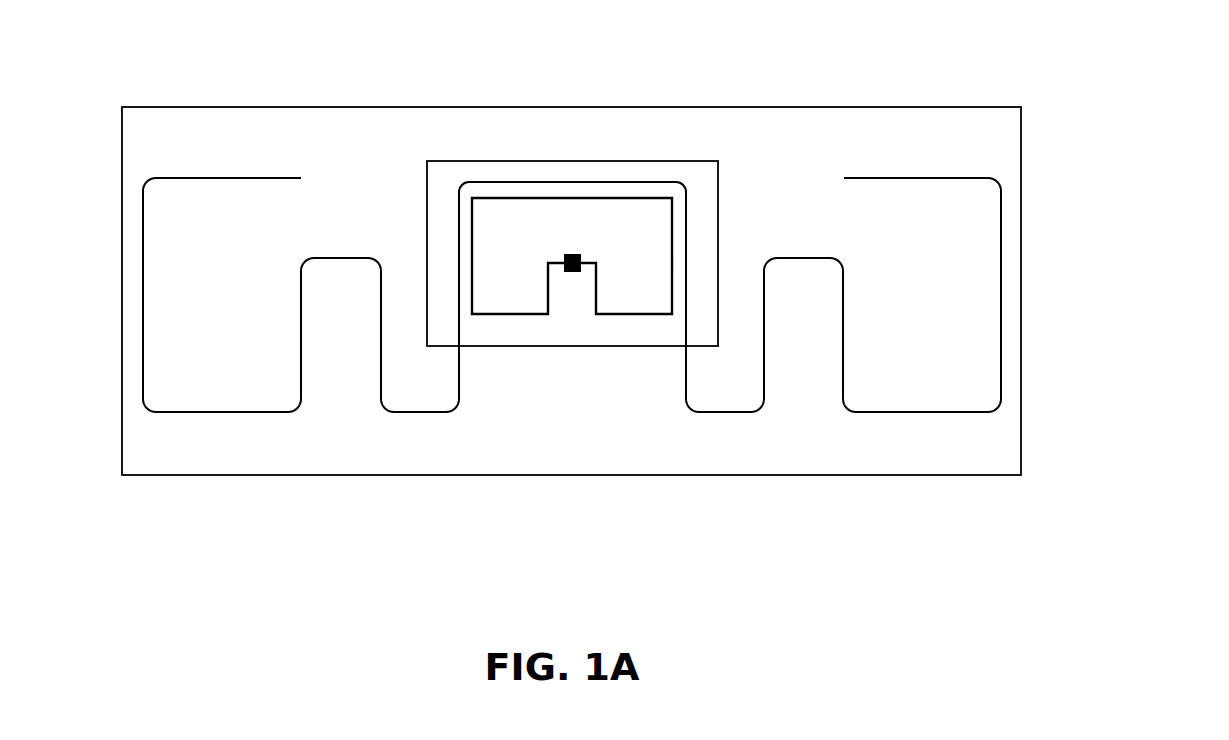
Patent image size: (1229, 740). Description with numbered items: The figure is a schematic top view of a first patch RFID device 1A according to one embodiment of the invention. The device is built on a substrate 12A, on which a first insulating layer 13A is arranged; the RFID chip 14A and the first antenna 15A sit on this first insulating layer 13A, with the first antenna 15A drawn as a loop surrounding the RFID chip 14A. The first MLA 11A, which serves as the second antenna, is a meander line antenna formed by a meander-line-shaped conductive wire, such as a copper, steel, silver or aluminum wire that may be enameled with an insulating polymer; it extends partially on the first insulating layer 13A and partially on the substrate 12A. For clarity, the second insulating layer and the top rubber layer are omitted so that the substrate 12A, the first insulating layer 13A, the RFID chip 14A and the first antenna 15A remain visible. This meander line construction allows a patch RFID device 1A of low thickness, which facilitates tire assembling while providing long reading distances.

The first patch RFID device 1A is at (1116, 111).
The first MLA 11A is at (144, 258).
The substrate 12A is at (167, 462).
The first insulating layer 13A is at (433, 171).
The RFID chip 14A is at (568, 252).
The first antenna 15A is at (633, 199).